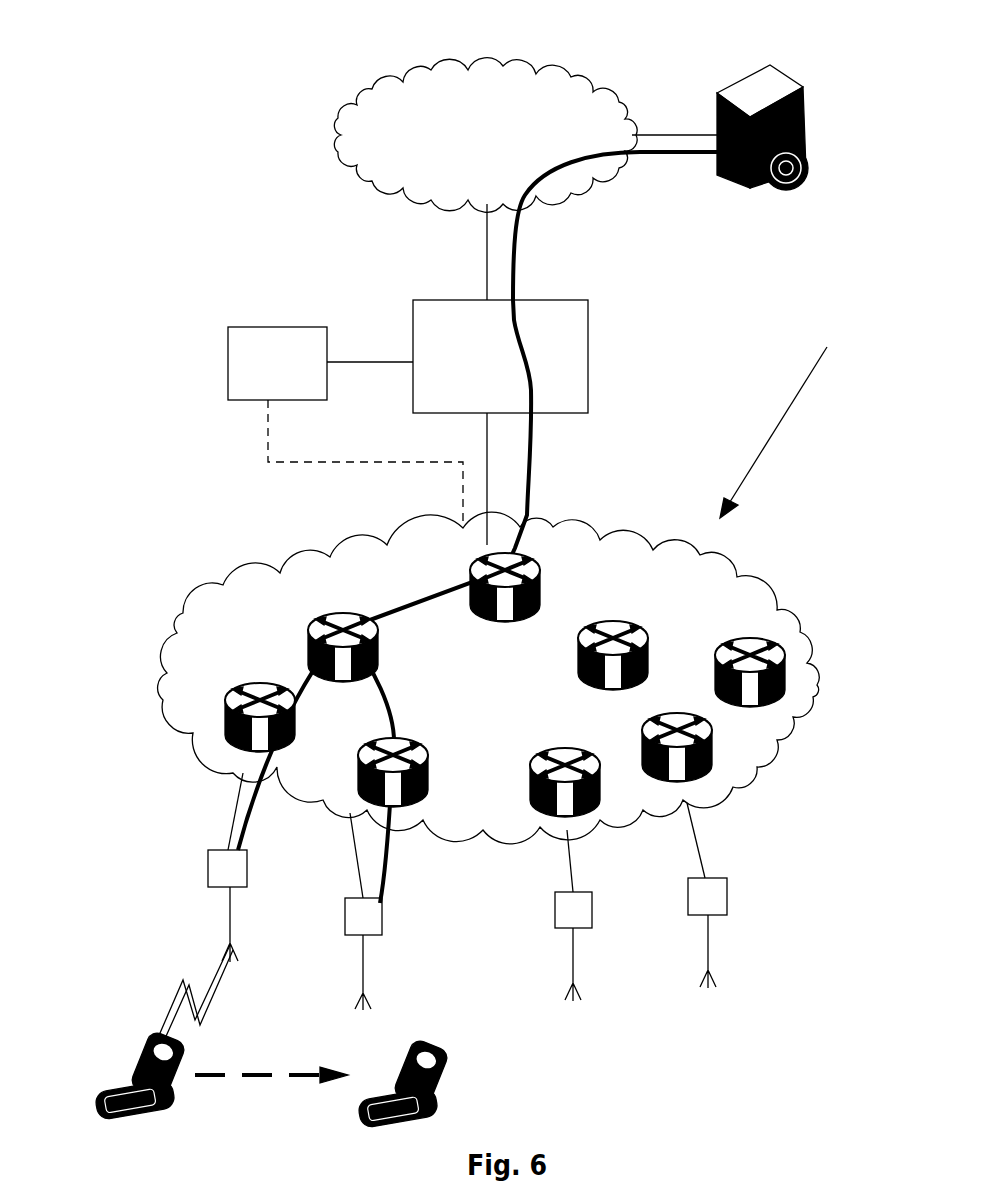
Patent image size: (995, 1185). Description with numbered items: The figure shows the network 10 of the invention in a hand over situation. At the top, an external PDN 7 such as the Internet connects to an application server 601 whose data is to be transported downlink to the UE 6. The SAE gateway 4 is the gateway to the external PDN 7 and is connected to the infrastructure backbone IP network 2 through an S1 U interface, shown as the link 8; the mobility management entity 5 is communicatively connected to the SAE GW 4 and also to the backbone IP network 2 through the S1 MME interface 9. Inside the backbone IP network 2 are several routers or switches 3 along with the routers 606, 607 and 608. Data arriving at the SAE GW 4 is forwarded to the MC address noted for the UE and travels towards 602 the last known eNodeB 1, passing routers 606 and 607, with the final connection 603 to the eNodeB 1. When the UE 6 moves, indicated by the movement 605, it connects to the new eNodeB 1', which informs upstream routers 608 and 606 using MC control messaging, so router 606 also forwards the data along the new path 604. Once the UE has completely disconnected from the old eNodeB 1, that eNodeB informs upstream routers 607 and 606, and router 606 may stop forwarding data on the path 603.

The eNodeB 1 is at (230, 910).
The new eNodeB 1' is at (398, 911).
The infrastructure backbone IP network 2 is at (225, 585).
The router or switch 3 is at (593, 750).
The SAE gateway 4 is at (589, 350).
The mobility management entity 5 is at (228, 340).
The wireless terminal 6 is at (143, 1043).
The external PDN 7 is at (370, 86).
The link between SAE GW and transport network 8 is at (490, 486).
The S1 MME interface 9 is at (268, 448).
The network 10 is at (783, 418).
The application server 601 is at (752, 192).
The forwarding direction toward the last known eNodeB 602 is at (470, 603).
The final connection to the eNodeB 603 is at (247, 817).
The new path 604 is at (395, 843).
The movement of mobile terminal 605 is at (247, 1077).
The router 606 is at (310, 631).
The router 607 is at (228, 704).
The router 608 is at (426, 755).